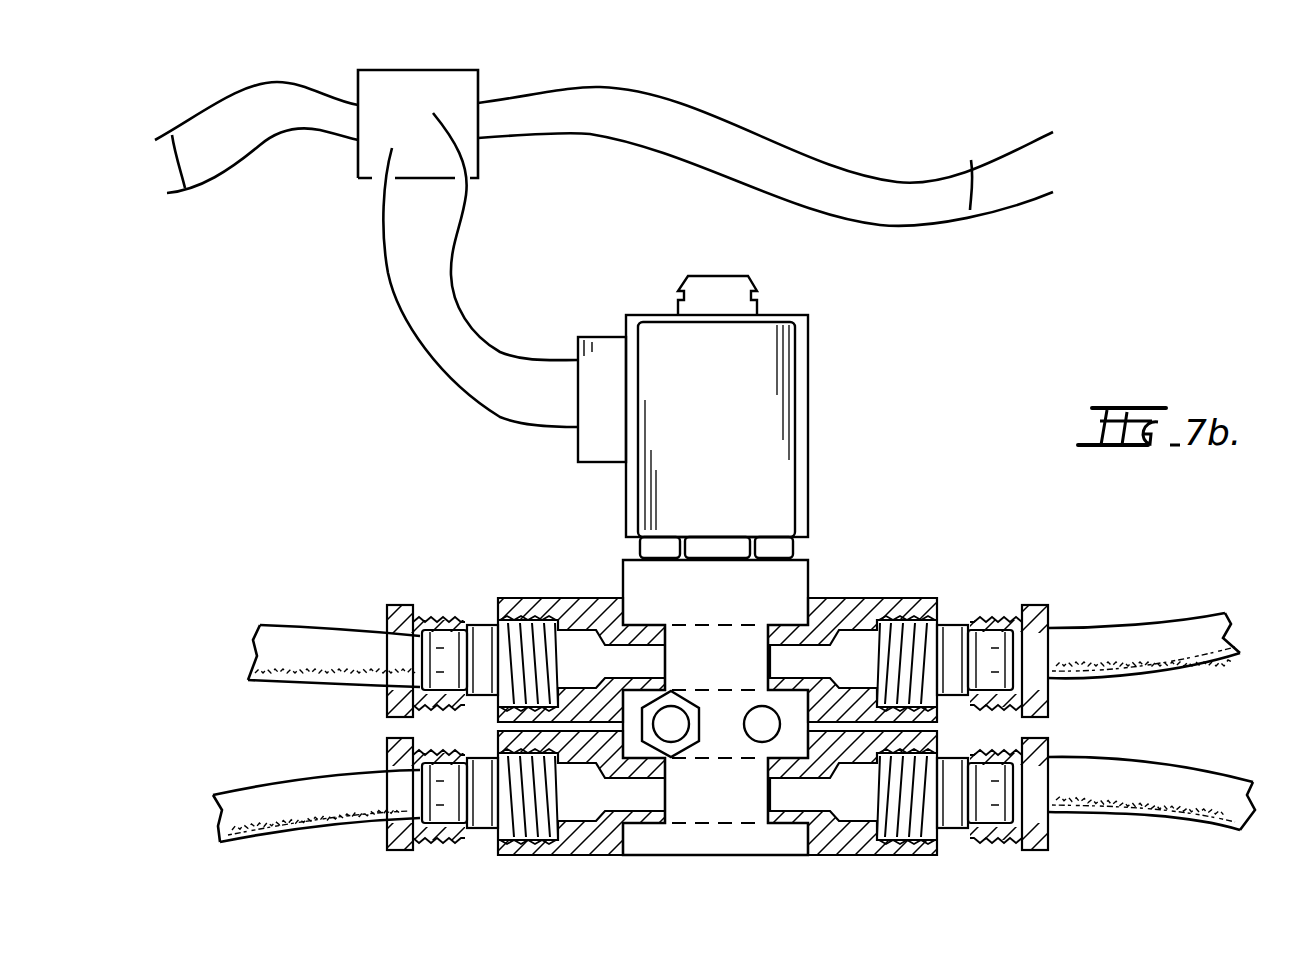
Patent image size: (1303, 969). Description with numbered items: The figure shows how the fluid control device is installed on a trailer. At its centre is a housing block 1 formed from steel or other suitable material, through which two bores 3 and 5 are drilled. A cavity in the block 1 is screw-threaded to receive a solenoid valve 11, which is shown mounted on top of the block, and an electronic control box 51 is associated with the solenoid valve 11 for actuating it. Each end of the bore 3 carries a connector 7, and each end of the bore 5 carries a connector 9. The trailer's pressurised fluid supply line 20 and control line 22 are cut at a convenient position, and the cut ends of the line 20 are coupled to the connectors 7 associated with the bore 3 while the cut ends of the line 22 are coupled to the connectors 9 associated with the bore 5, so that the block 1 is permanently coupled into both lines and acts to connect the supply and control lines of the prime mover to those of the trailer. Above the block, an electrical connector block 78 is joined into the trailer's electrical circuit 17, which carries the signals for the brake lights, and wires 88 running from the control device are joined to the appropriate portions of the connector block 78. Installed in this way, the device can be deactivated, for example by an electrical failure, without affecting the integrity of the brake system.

The housing block 1 is at (782, 597).
The bore 3 is at (710, 643).
The bore 5 is at (720, 797).
The connectors 7 is at (552, 623).
The connectors 9 is at (520, 858).
The solenoid valve 11 is at (835, 418).
The circuit 17 is at (176, 130).
The pressurised fluid supply line 20 is at (285, 803).
The control line 22 is at (348, 650).
The electronic control box 51 is at (600, 418).
The electrical connector block 78 is at (478, 150).
The wires 88 is at (430, 367).